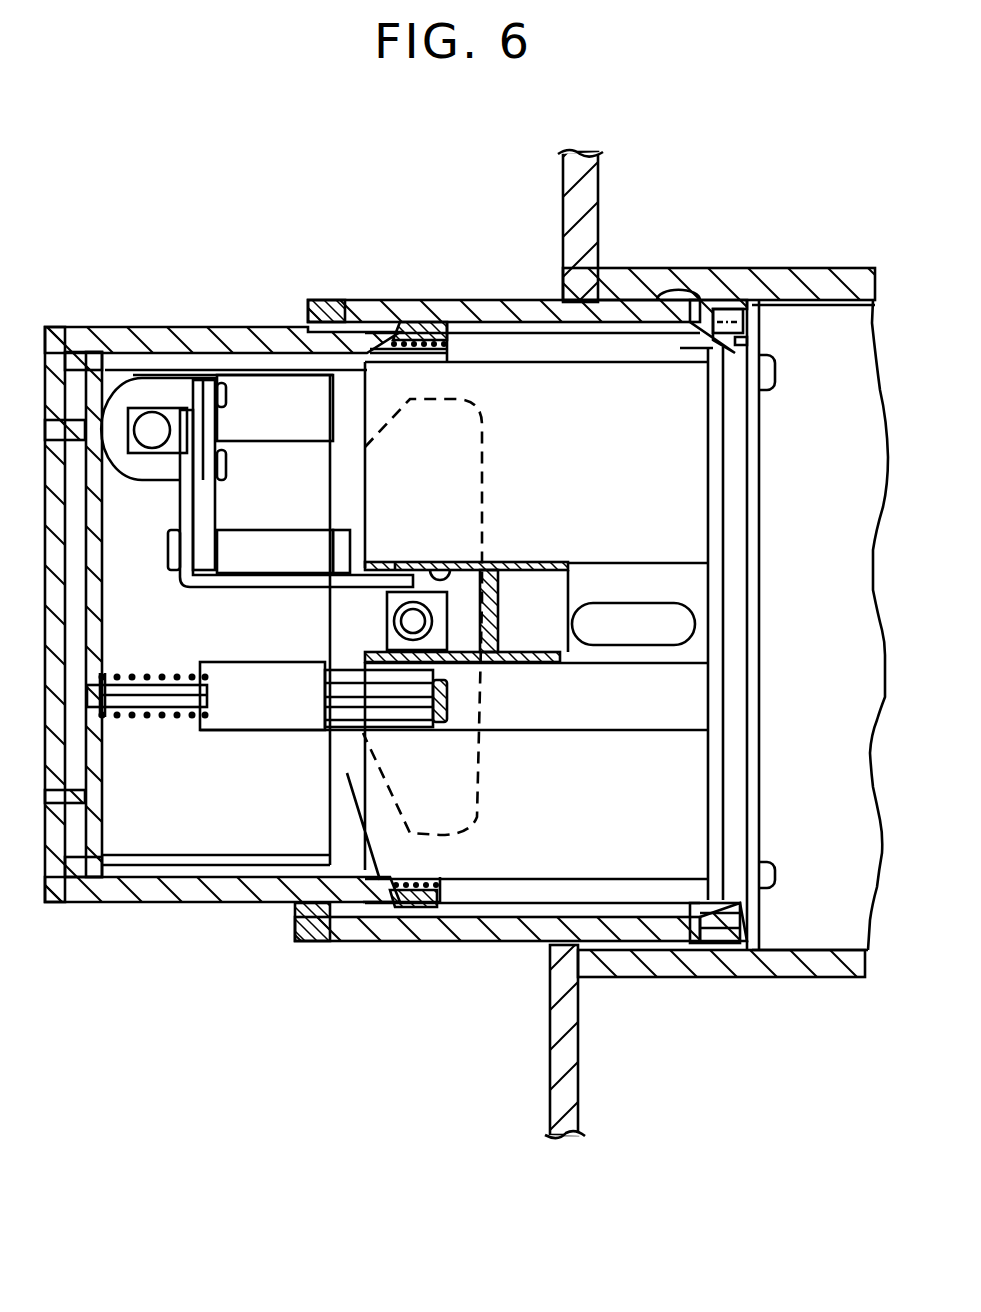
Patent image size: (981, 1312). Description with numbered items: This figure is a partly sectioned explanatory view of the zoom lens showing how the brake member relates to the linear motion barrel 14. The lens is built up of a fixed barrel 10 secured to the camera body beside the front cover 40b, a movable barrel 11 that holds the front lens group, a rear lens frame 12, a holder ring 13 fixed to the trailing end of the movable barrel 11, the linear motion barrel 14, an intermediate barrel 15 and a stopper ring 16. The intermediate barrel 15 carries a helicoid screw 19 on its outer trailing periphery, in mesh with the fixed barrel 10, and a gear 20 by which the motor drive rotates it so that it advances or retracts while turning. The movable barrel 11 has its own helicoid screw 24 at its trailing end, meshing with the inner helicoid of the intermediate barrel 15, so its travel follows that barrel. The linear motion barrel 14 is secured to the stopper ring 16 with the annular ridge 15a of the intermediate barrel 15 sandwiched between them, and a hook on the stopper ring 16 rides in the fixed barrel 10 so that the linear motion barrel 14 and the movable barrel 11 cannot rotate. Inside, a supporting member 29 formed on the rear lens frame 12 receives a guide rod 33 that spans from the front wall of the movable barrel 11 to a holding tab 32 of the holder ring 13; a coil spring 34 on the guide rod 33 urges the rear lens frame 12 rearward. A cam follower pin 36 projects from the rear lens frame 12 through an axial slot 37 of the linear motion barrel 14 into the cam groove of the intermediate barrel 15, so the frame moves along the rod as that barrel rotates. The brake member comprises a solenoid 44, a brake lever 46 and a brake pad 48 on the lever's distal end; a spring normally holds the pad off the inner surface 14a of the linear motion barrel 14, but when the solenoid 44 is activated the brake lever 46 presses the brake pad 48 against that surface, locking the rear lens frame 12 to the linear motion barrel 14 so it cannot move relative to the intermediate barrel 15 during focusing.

The fixed barrel 10 is at (710, 985).
The movable barrel 11 is at (152, 905).
The rear lens frame 12 is at (492, 452).
The holder ring 13 is at (462, 880).
The linear motion barrel 14 is at (680, 797).
The inner surface of the linear motion barrel 14a is at (444, 577).
The intermediate barrel 15 is at (362, 950).
The annular ridge 15a is at (740, 352).
The stopper ring 16 is at (772, 697).
The helicoid screw 19 is at (678, 293).
The gear 20 is at (731, 313).
The helicoid screw 24 is at (428, 332).
The supporting member 29 is at (278, 730).
The holding tab 32 is at (445, 727).
The guide rod 33 is at (127, 715).
The coil spring 34 is at (172, 715).
The cam follower pin 36 is at (413, 621).
The axial slot 37 is at (620, 635).
The front cover 40b is at (556, 1068).
The solenoid 44 is at (152, 440).
The brake lever 46 is at (210, 582).
The brake pad 48 is at (398, 563).